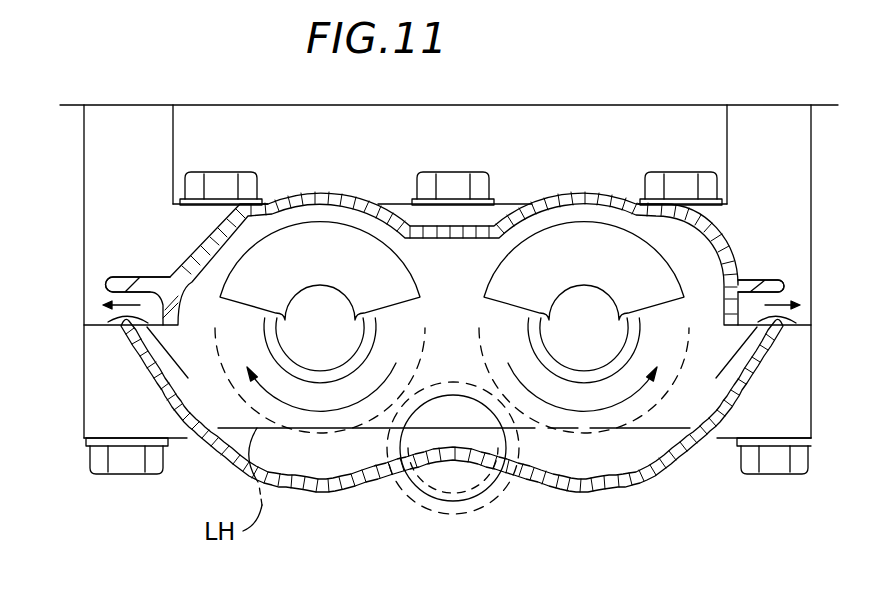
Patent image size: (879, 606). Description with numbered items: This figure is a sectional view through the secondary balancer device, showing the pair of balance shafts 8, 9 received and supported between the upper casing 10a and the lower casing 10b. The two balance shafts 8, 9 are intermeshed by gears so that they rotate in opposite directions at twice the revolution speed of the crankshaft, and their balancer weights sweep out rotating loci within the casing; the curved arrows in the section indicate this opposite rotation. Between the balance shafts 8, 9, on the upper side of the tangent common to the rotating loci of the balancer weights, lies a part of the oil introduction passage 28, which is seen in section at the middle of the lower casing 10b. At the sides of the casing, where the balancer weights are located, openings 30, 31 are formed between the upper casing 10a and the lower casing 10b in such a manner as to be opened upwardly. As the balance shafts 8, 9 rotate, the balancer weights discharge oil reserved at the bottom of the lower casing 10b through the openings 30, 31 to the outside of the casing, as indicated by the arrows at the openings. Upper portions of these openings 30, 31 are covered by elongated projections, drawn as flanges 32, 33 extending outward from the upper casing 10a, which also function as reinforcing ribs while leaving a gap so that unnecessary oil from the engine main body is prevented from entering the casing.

The balance shaft 8 is at (318, 360).
The balance shaft 9 is at (590, 360).
The upper casing 10a is at (592, 193).
The lower casing 10b is at (590, 492).
The oil introduction passage 28 is at (468, 497).
The opening 30 is at (110, 326).
The opening 31 is at (782, 326).
The left flange 32 is at (128, 278).
The right flange 33 is at (770, 281).